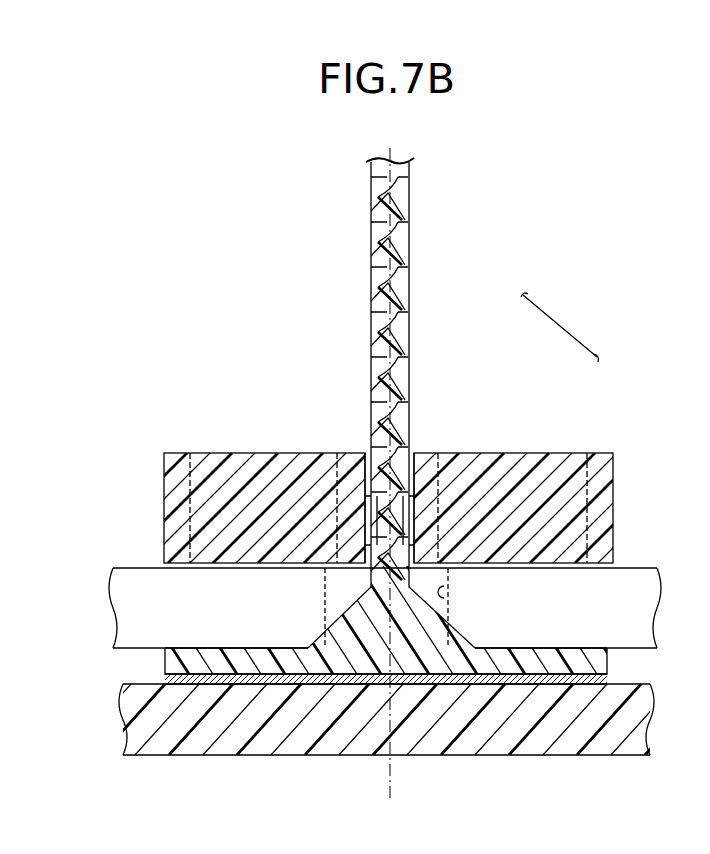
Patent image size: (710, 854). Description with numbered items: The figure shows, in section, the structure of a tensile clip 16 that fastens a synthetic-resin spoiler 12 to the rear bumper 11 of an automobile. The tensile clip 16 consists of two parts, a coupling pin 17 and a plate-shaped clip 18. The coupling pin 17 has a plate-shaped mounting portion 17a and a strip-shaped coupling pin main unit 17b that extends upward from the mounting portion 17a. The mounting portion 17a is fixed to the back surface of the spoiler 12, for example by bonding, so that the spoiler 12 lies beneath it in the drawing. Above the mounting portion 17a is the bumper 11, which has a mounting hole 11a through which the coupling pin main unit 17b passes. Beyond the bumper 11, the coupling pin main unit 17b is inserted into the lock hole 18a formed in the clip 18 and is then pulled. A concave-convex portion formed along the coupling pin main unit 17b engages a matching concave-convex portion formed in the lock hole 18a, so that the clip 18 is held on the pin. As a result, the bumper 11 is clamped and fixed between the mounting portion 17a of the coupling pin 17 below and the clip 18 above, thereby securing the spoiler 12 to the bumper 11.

The bumper 11 is at (635, 567).
The mounting hole 11a is at (452, 603).
The spoiler 12 is at (520, 742).
The tensile clip 16 is at (560, 327).
The coupling pin 17 is at (430, 352).
The mounting portion 17a is at (258, 648).
The coupling pin main unit 17b is at (409, 283).
The clip 18 is at (535, 450).
The lock hole 18a is at (366, 468).